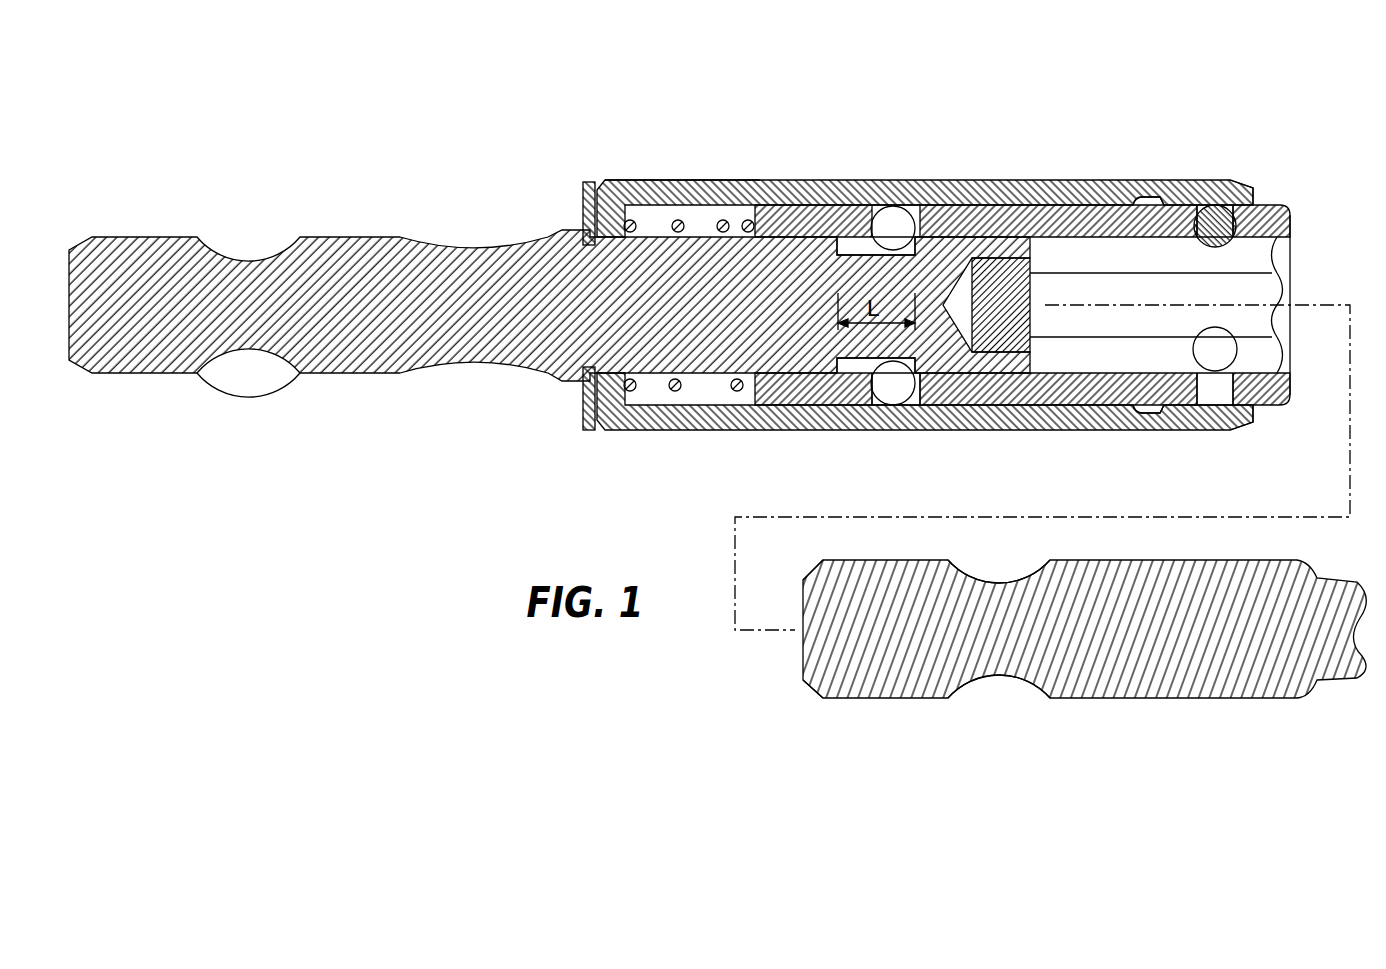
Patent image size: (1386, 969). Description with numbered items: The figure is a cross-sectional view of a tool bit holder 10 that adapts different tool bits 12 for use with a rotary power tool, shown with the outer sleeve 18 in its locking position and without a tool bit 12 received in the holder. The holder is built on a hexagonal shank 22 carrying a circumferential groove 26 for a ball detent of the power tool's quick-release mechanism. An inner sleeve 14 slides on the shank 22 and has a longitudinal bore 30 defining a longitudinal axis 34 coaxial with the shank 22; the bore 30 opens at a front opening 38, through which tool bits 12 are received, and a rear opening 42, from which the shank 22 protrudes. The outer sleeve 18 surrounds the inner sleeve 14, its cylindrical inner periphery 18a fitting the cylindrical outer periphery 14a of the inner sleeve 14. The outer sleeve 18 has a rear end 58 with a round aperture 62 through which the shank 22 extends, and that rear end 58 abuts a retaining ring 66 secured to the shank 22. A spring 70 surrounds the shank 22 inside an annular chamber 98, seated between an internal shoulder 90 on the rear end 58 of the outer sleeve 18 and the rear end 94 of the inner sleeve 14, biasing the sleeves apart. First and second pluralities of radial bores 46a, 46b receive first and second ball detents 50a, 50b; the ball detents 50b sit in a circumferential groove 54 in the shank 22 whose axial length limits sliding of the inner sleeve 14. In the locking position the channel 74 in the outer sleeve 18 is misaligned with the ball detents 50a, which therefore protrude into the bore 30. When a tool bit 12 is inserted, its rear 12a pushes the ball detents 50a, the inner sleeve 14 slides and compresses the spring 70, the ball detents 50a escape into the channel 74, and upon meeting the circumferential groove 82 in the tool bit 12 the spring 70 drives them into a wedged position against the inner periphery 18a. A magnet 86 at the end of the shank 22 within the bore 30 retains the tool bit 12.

The tool bit holder 10 is at (1045, 83).
The tool bit 12 is at (1177, 698).
The rear of the tool bit 12a is at (803, 686).
The inner sleeve 14 is at (1005, 203).
The cylindrical outer periphery of the inner sleeve 14a is at (1256, 195).
The outer sleeve 18 is at (735, 197).
The cylindrical inner periphery of the outer sleeve 18a is at (712, 190).
The shank 22 is at (362, 265).
The circumferential groove 26 is at (263, 362).
The longitudinal bore 30 is at (1093, 360).
The longitudinal axis 34 is at (1302, 305).
The front opening 38 is at (1292, 235).
The rear opening 42 is at (734, 387).
The first plurality of radial bores 46a is at (1218, 206).
The second plurality of radial bores 46b is at (893, 208).
The first plurality of ball detents 50a is at (1196, 207).
The second plurality of ball detents 50b is at (915, 205).
The circumferential groove 54 is at (840, 374).
The rear end of the outer sleeve 58 is at (588, 408).
The round aperture 62 is at (644, 380).
The retaining ring 66 is at (582, 213).
The spring 70 is at (679, 220).
The channel 74 is at (1145, 207).
The circumferential groove 82 is at (1042, 577).
The magnet 86 is at (1010, 345).
The internal shoulder 90 is at (628, 213).
The rear end of the inner sleeve 94 is at (750, 376).
The annular chamber 98 is at (680, 392).